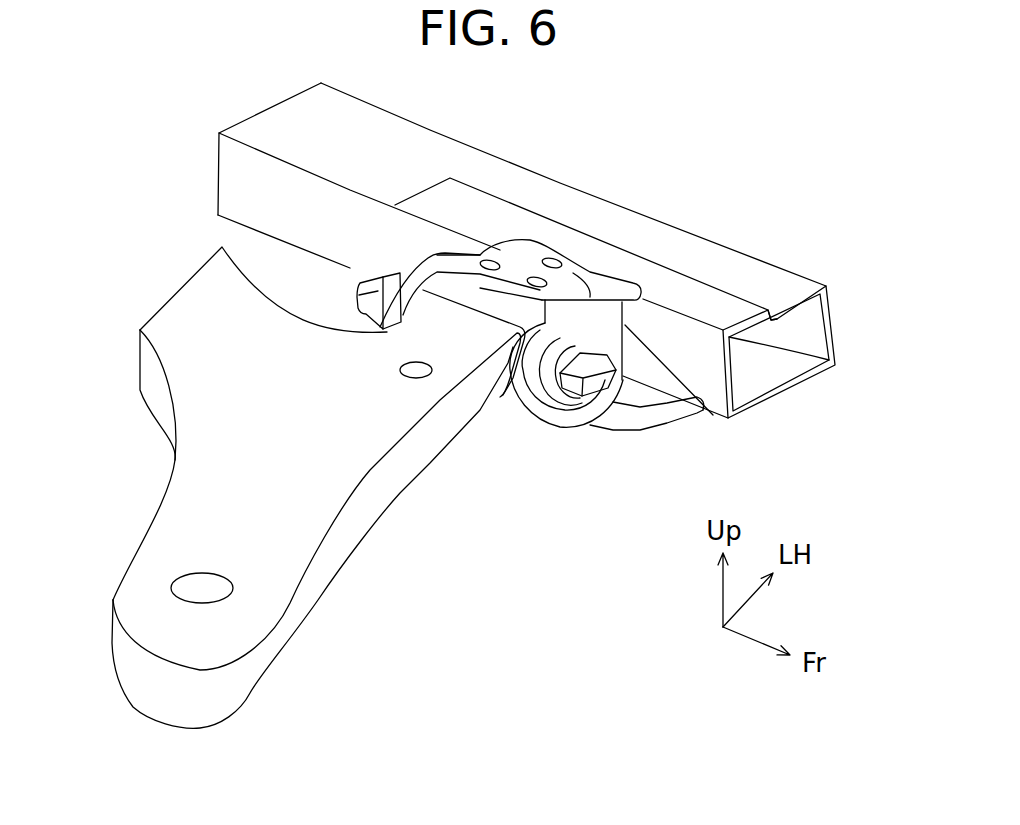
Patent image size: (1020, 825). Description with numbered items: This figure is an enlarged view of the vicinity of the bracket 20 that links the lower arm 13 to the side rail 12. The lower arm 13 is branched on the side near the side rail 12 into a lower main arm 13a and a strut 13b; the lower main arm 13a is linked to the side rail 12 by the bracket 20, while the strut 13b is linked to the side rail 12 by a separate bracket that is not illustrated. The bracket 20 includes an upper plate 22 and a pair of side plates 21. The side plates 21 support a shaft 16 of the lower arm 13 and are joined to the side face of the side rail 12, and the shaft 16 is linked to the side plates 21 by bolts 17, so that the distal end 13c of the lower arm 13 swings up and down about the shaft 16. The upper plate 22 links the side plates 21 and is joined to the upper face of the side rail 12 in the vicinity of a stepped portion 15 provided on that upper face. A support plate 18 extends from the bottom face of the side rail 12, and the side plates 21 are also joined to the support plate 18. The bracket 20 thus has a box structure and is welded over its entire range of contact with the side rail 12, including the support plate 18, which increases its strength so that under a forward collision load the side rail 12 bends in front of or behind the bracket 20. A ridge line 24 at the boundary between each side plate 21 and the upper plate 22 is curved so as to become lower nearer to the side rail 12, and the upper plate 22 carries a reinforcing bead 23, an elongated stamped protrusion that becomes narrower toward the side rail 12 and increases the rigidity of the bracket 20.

The side rail 12 is at (388, 142).
The lower arm 13 is at (286, 466).
The lower main arm 13a is at (473, 393).
The strut 13b is at (195, 315).
The distal end 13c is at (253, 667).
The stepped portion 15 is at (753, 285).
The shaft 16 is at (497, 303).
The bolts 17 is at (360, 287).
The support plate 18 is at (583, 412).
The bracket 20 is at (535, 430).
The side plates 21 is at (415, 278).
The upper plate 22 is at (613, 285).
The reinforcing bead 23 is at (533, 258).
The ridge line 24 is at (435, 250).